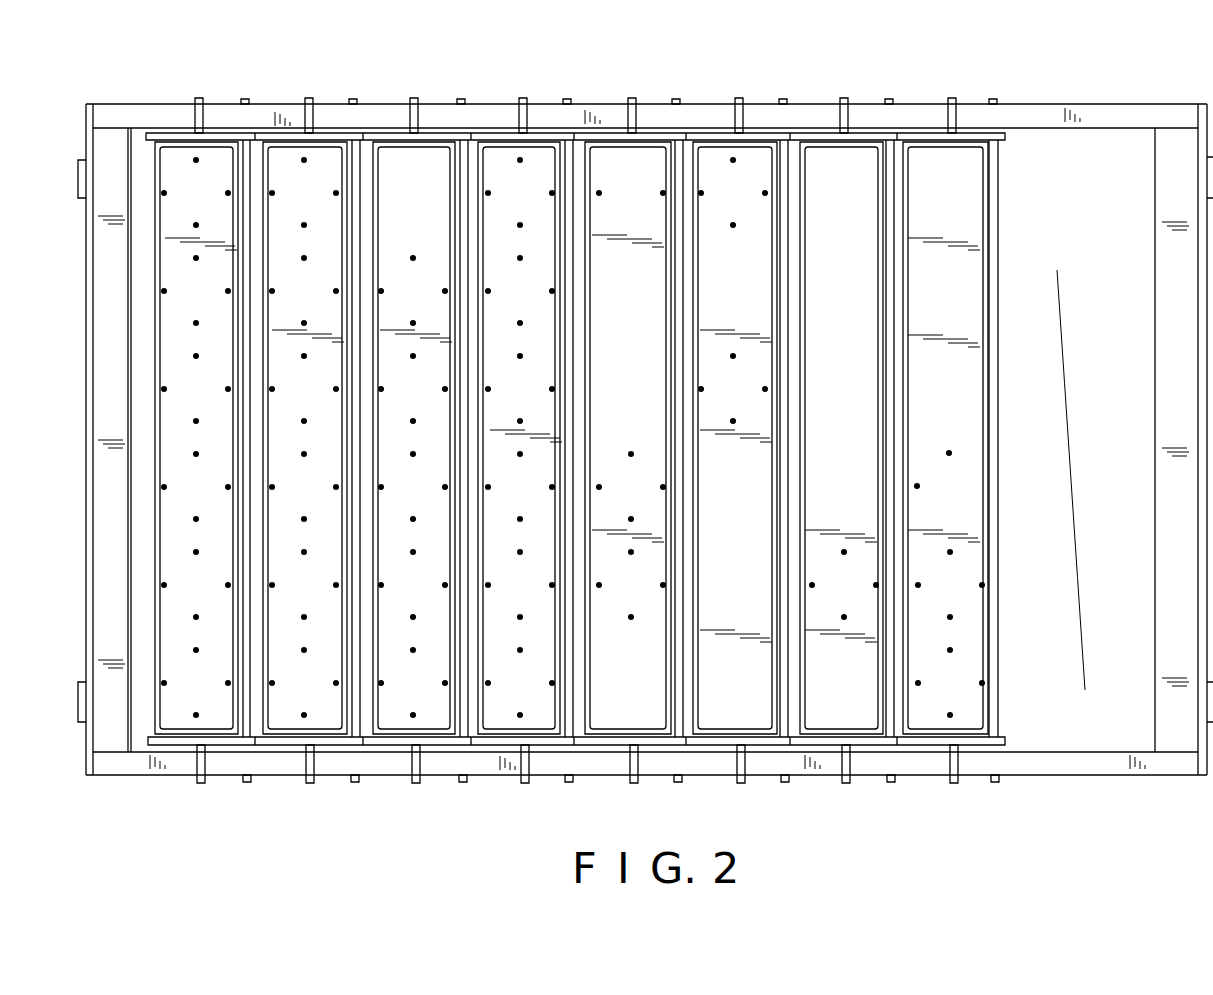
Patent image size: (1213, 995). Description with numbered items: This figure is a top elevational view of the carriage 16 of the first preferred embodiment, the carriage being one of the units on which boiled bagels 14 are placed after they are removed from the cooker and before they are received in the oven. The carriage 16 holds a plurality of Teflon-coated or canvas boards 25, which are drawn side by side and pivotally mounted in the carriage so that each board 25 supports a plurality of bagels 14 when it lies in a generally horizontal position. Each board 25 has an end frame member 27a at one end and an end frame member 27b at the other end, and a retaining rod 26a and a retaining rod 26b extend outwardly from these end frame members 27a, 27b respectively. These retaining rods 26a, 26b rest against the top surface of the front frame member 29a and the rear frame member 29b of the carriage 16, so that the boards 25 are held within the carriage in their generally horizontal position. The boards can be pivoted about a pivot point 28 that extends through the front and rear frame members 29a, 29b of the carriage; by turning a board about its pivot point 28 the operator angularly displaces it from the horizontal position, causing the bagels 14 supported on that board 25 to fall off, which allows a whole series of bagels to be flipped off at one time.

The carriage 16 is at (1058, 97).
The bagels 14 is at (977, 300).
The board 25 is at (993, 260).
The retaining rod 26a is at (407, 98).
The retaining rod 26b is at (353, 783).
The end frame member 27a is at (427, 138).
The end frame member 27b is at (437, 740).
The pivot point 28 is at (566, 98).
The front frame member 29a is at (328, 105).
The rear frame member 29b is at (290, 765).